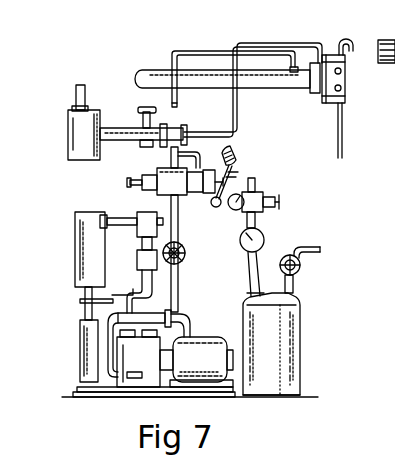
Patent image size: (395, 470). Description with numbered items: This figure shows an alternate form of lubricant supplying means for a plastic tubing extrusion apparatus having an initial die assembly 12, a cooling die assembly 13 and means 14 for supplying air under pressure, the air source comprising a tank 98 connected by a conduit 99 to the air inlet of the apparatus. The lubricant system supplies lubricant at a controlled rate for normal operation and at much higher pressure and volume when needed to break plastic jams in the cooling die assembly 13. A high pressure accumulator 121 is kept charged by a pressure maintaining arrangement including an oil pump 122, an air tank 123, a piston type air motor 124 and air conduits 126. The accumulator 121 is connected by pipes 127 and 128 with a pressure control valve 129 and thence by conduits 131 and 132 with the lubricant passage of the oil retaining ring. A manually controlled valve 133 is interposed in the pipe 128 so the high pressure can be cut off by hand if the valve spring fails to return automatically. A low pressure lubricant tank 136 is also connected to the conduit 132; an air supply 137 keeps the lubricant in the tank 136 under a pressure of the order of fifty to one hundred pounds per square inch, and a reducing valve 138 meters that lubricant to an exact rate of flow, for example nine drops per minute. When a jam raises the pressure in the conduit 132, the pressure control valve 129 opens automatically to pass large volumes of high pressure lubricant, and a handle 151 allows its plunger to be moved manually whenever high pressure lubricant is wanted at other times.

The initial die assembly 12 is at (332, 105).
The cooling die assembly 13 is at (200, 37).
The means for supplying air under pressure 14 is at (277, 373).
The tank 98 is at (299, 347).
The conduit 99 is at (306, 246).
The accumulator 121 is at (92, 384).
The oil pump 122 is at (222, 338).
The air tank 123 is at (95, 207).
The piston type air motor 124 is at (143, 381).
The air conduits 126 is at (143, 281).
The pipe 127 is at (178, 303).
The pipe 128 is at (179, 276).
The pressure control valve 129 is at (165, 188).
The conduit 131 is at (170, 159).
The conduit 132 is at (238, 119).
The manually controlled valve 133 is at (186, 250).
The low pressure lubricant tank 136 is at (90, 112).
The air supply 137 is at (82, 84).
The reducing valve 138 is at (155, 123).
The handle 151 is at (229, 179).